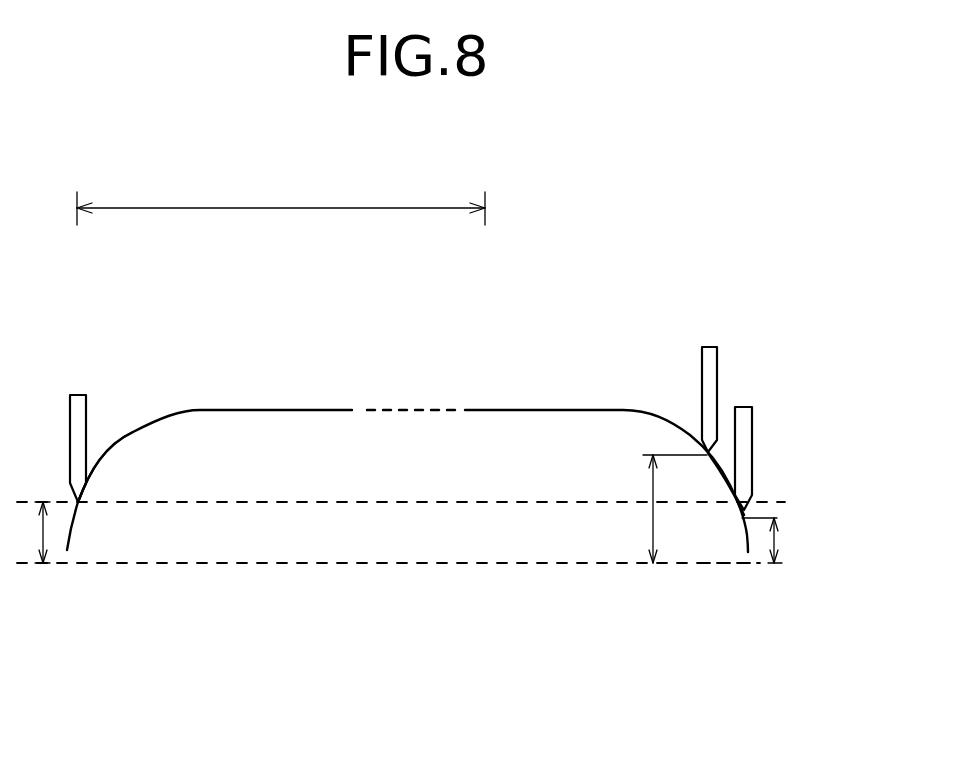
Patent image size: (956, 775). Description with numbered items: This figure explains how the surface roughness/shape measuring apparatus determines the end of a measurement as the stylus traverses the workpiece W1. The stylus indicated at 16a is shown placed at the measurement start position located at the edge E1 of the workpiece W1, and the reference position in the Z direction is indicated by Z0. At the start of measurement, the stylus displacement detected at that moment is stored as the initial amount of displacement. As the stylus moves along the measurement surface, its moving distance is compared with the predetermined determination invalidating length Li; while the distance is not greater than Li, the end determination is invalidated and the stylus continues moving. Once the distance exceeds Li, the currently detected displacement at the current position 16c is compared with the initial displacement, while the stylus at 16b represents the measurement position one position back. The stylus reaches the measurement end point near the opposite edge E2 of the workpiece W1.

The stylus at measurement start position 16a is at (78, 395).
The stylus at previous measurement position 16b is at (708, 347).
The stylus at current position 16c is at (752, 430).
The workpiece W1 is at (200, 410).
The edge of the workpiece E1 is at (110, 450).
The edge of the workpiece E2 is at (720, 473).
The determination invalidating length Li is at (281, 200).
The reference position in the Z direction Z0 is at (755, 565).